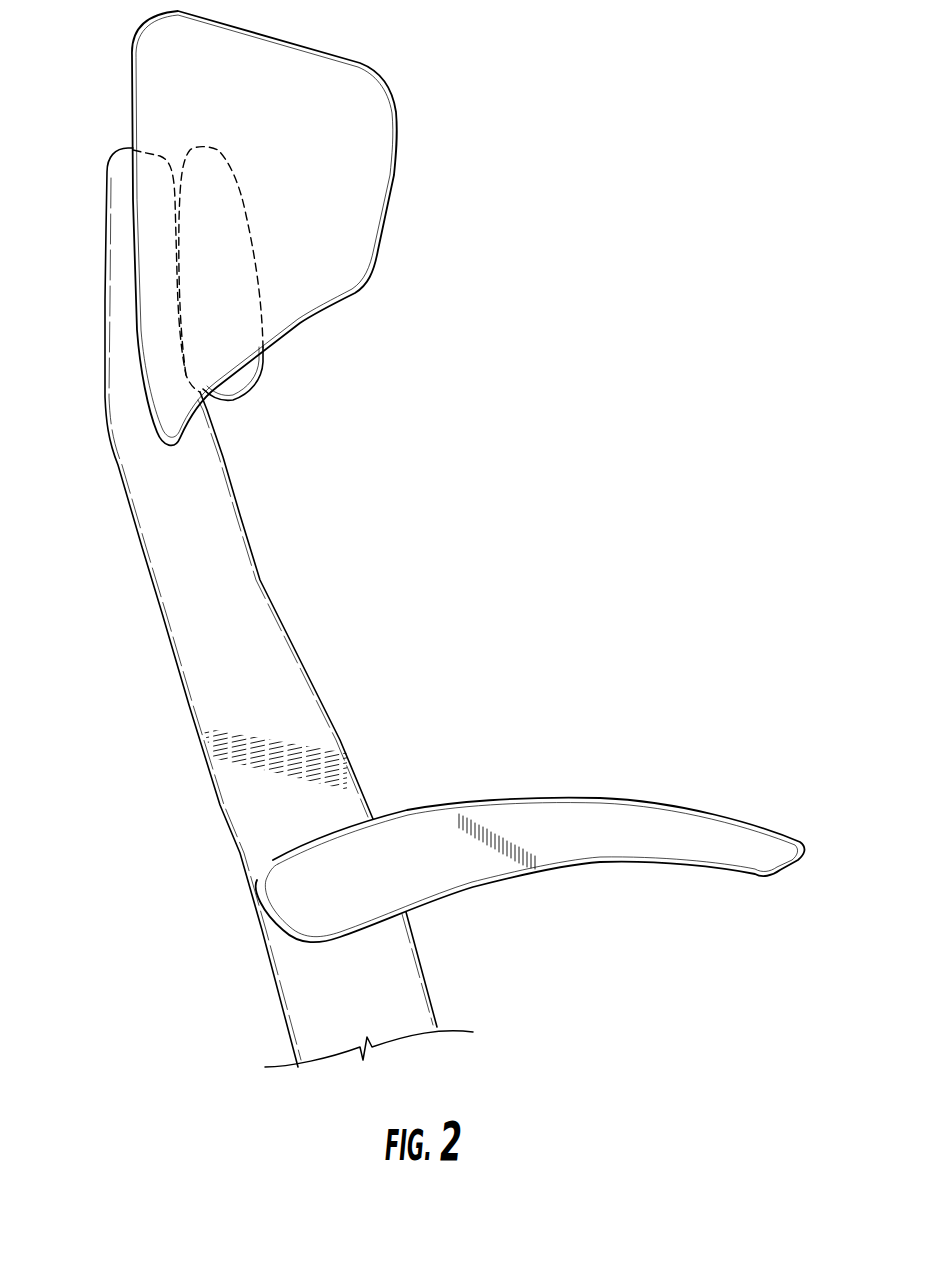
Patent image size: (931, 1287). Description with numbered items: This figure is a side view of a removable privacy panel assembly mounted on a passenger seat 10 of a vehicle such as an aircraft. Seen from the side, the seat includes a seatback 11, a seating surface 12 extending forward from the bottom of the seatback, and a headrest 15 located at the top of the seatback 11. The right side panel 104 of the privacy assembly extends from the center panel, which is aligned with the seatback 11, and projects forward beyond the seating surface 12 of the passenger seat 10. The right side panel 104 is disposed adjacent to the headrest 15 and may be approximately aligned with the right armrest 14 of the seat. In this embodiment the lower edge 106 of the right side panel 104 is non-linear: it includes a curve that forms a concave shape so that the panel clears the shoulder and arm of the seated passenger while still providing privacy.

The passenger seat 10 is at (268, 607).
The seatback 11 is at (150, 527).
The seating surface 12 is at (297, 653).
The right armrest 14 is at (630, 820).
The headrest 15 is at (235, 217).
The right side panel 104 is at (292, 228).
The lower edge 106 is at (297, 330).